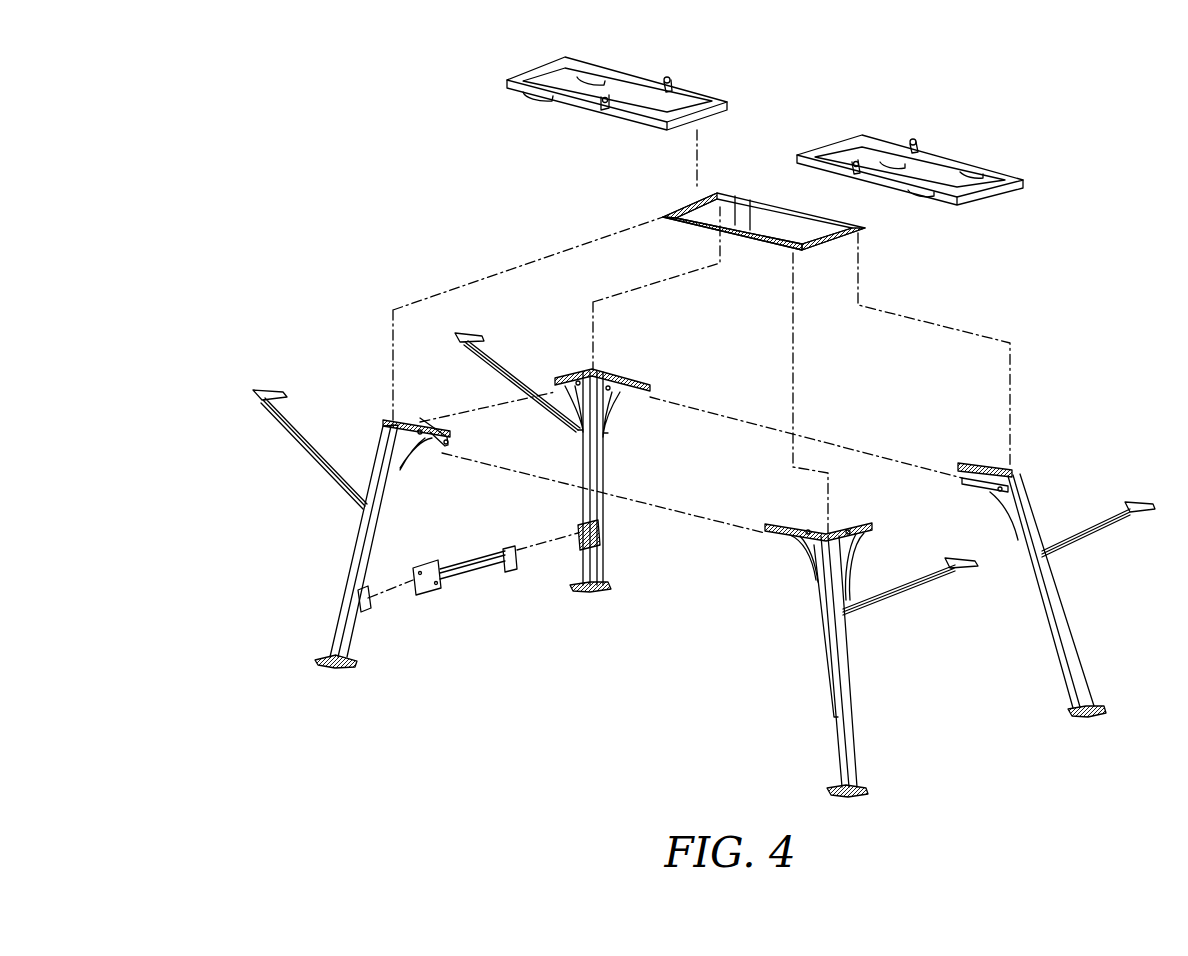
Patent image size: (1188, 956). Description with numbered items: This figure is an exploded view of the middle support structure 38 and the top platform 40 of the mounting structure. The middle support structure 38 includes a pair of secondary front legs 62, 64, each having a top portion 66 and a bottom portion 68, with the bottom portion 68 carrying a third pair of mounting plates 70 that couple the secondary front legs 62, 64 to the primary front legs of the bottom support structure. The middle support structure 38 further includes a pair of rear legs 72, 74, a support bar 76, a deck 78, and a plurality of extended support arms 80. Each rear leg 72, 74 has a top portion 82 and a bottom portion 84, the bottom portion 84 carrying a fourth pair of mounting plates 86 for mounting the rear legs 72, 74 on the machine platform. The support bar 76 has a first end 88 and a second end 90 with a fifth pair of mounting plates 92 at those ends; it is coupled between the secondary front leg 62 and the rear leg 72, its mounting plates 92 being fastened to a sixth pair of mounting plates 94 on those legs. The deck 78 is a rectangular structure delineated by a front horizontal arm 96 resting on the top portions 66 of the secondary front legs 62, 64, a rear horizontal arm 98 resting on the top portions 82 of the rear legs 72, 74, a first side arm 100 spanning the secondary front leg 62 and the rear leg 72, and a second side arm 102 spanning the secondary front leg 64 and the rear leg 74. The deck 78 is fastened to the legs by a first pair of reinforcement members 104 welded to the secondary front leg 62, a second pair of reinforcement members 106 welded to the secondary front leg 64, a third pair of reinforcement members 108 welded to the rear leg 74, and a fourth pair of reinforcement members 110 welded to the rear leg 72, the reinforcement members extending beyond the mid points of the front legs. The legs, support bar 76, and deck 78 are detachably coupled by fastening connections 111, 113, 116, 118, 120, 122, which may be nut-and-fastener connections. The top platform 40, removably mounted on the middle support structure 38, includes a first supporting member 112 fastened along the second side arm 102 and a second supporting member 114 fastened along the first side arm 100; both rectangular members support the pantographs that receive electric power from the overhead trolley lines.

The middle support structure 38 is at (241, 379).
The top platform 40 is at (1040, 158).
The secondary front leg 62 is at (345, 582).
The secondary front leg 64 is at (858, 748).
The top portion 66 is at (380, 418).
The bottom portion 68 is at (315, 654).
The third pair of mounting plates 70 is at (352, 662).
The rear leg 72 is at (605, 468).
The rear leg 74 is at (1085, 690).
The support bar 76 is at (471, 605).
The deck 78 is at (763, 188).
The extended support arms 80 is at (308, 428).
The top portion 82 is at (605, 362).
The bottom portion 84 is at (620, 580).
The fourth pair of mounting plates 86 is at (605, 590).
The first end 88 is at (425, 556).
The second end 90 is at (505, 538).
The fifth pair of mounting plates 92 is at (423, 592).
The sixth pair of mounting plates 94 is at (580, 531).
The front horizontal arm 96 is at (665, 214).
The rear horizontal arm 98 is at (730, 196).
The first side arm 100 is at (690, 203).
The second side arm 102 is at (812, 236).
The first pair of reinforcement members 104 is at (432, 424).
The second pair of reinforcement members 106 is at (765, 525).
The third pair of reinforcement members 108 is at (962, 462).
The fourth pair of reinforcement members 110 is at (630, 380).
The fastening connection 111 is at (415, 398).
The first supporting member 112 is at (688, 88).
The fastening connection 113 is at (576, 348).
The second supporting member 114 is at (955, 153).
The fastening connection 116 is at (1070, 470).
The fastening connection 118 is at (775, 585).
The fastening connection 120 is at (553, 610).
The fastening connection 122 is at (417, 680).